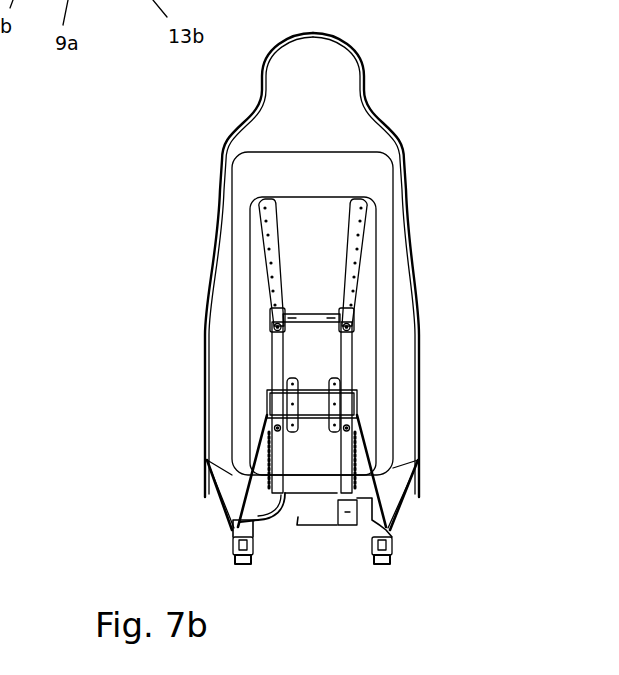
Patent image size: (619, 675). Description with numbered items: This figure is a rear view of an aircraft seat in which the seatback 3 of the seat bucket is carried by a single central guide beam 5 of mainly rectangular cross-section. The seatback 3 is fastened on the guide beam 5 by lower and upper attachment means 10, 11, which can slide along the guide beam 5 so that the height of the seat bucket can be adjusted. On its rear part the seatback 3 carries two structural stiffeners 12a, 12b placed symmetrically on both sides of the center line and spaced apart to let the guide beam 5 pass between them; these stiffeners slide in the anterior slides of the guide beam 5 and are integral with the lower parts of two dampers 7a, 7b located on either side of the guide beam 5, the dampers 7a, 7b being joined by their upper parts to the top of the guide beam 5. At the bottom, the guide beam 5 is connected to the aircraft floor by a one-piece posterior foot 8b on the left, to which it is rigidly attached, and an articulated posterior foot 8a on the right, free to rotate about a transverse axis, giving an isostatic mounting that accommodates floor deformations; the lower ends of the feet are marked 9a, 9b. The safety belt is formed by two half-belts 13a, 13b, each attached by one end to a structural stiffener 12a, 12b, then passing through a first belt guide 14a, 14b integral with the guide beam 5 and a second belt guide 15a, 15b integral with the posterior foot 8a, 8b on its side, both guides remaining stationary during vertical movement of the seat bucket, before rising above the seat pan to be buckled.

The seatback 3 is at (370, 102).
The guide beam 5 is at (322, 342).
The damper 7a is at (346, 362).
The damper 7b is at (277, 350).
The articulated posterior foot 8a is at (393, 547).
The one-piece posterior foot 8b is at (233, 543).
The right pivot pad 9a is at (455, 549).
The left pivot pad 9b is at (158, 561).
The lower attachment means 10 is at (363, 422).
The upper attachment means 11 is at (338, 314).
The structural stiffener 12a is at (362, 200).
The structural stiffener 12b is at (255, 195).
The half-belt 13a is at (363, 453).
The half-belt 13b is at (262, 445).
The first belt guide 14a is at (360, 410).
The first belt guide 14b is at (287, 410).
The second belt guide 15a is at (395, 530).
The second belt guide 15b is at (230, 530).